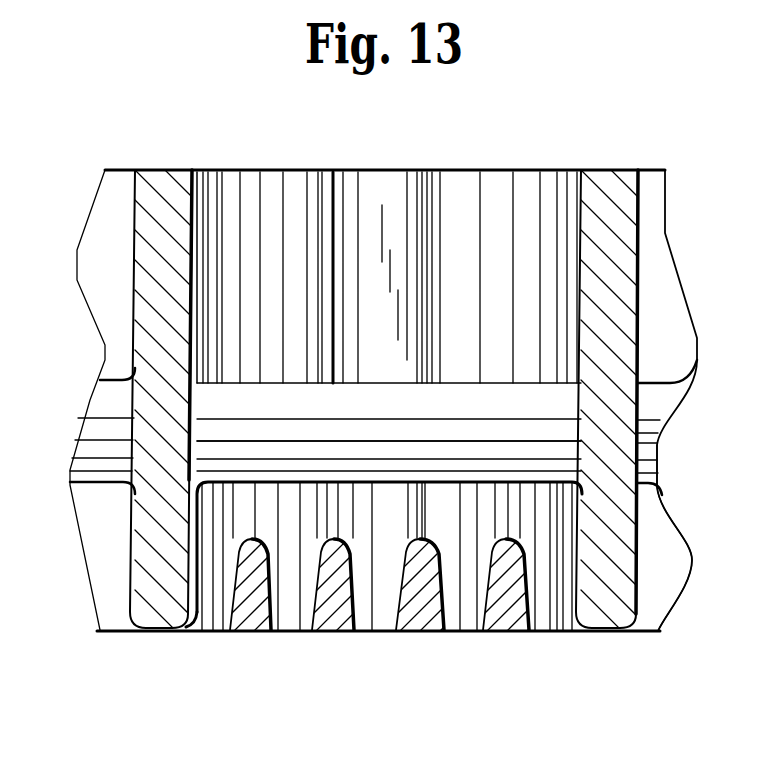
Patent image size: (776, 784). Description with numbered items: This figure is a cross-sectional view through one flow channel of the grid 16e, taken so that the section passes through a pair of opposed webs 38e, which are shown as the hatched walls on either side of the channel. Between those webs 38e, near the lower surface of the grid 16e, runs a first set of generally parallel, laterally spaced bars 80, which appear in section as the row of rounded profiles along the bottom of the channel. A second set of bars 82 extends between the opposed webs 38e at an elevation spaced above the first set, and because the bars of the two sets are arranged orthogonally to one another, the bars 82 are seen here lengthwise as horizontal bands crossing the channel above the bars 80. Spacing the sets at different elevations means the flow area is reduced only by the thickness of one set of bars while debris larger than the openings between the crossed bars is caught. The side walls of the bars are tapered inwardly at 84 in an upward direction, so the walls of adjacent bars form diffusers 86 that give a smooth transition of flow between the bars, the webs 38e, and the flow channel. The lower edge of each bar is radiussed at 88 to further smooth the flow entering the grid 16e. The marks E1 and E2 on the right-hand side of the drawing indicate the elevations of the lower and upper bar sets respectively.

The grid 16e is at (600, 170).
The web 38e is at (608, 243).
The second set of bars 82 is at (555, 408).
The second end E2 is at (563, 435).
The first end E1 is at (665, 600).
The inwardly tapered side walls 84 is at (540, 560).
The radiussed lower edges 88 is at (277, 618).
The diffuser 86 is at (377, 595).
The first set of bars 80 is at (442, 608).